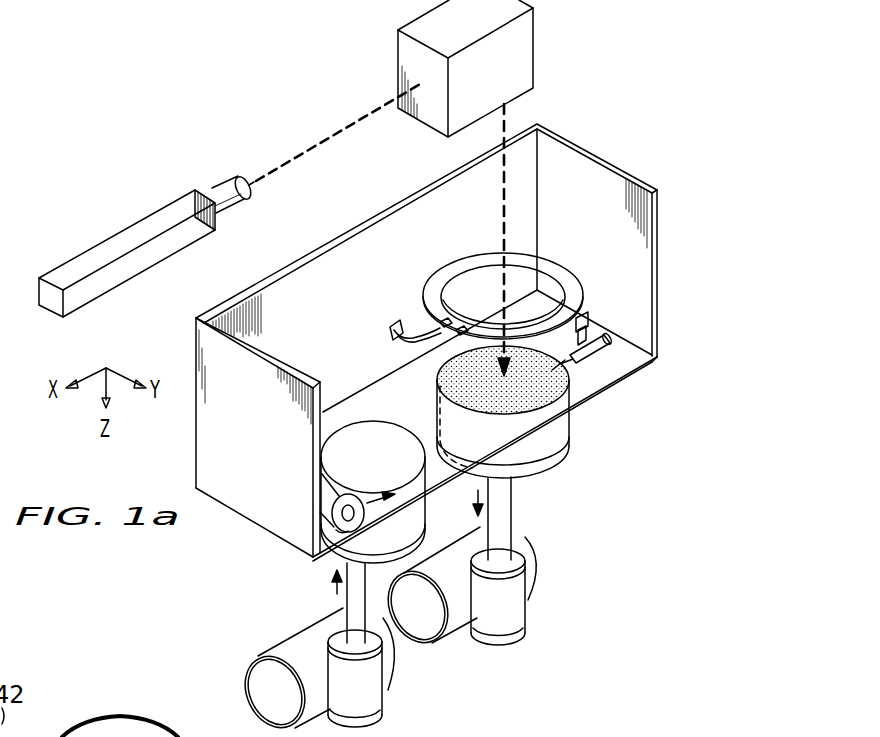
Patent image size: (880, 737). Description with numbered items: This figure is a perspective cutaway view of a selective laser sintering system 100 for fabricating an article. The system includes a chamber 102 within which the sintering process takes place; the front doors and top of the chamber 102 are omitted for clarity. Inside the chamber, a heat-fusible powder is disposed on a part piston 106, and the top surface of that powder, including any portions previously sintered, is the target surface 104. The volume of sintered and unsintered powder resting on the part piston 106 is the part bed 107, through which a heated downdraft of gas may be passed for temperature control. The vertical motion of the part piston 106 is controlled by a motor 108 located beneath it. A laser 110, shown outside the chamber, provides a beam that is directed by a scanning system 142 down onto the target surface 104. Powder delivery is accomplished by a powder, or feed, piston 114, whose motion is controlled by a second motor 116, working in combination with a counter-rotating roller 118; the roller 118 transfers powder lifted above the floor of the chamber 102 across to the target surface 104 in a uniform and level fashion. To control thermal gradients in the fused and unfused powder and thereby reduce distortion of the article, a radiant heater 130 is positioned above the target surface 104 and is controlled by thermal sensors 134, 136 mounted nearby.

The selective laser sintering system 100 is at (76, 72).
The chamber 102 is at (622, 168).
The target surface 104 is at (440, 372).
The part piston 106 is at (567, 446).
The part bed 107 is at (452, 422).
The motor 108 is at (524, 602).
The laser 110 is at (112, 242).
The powder piston 114 is at (335, 558).
The motor 116 is at (381, 686).
The counter-rotating roller 118 is at (344, 484).
The radiant heater 130 is at (438, 279).
The thermal sensor 134 is at (607, 343).
The thermal sensor 136 is at (583, 335).
The scanning system 142 is at (537, 42).